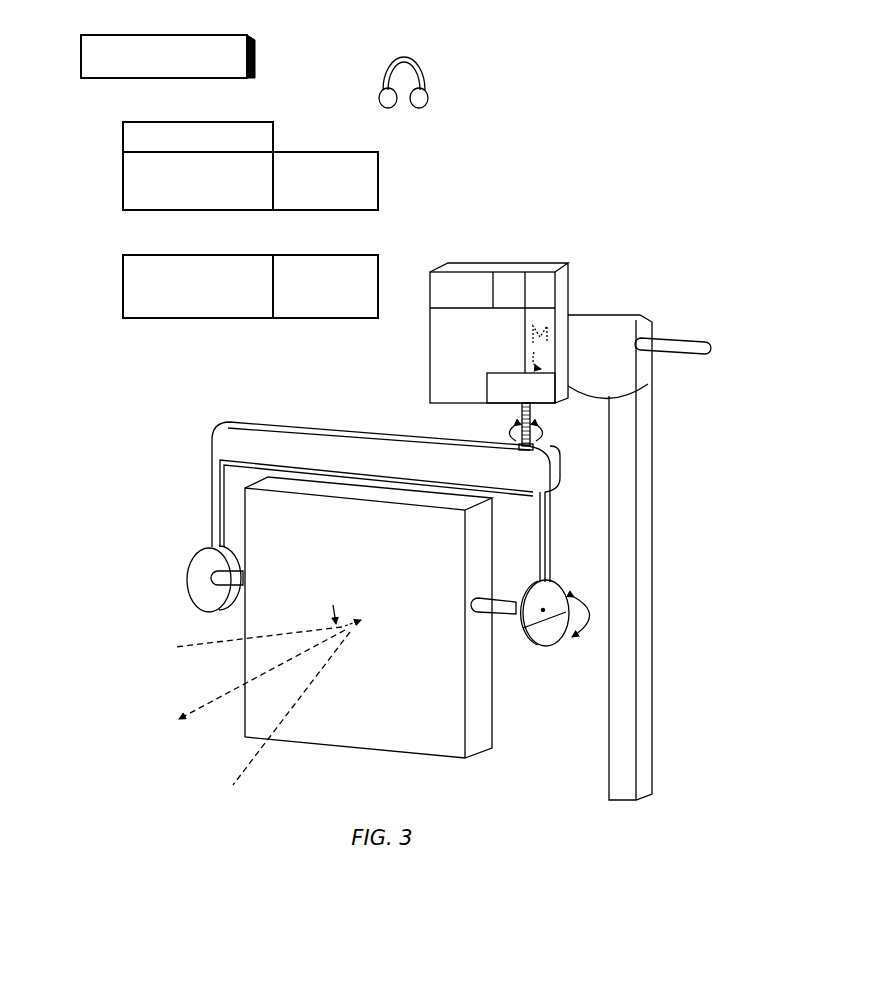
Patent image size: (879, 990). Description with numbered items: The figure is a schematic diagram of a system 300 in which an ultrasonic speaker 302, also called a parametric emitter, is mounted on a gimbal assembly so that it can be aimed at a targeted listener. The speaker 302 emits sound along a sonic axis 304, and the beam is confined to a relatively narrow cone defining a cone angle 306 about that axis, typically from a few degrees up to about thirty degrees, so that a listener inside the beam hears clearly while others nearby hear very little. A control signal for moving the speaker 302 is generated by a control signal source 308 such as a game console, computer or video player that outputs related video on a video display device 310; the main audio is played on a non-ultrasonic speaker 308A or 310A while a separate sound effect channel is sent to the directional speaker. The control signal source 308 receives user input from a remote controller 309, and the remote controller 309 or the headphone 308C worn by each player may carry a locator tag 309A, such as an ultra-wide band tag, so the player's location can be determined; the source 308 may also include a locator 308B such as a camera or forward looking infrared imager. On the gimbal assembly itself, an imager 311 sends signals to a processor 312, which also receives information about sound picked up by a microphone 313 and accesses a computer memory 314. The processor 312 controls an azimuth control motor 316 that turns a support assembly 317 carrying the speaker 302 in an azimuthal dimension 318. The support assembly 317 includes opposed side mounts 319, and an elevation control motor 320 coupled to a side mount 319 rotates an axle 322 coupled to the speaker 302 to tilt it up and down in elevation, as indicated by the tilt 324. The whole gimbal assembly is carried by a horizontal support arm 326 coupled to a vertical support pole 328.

The system 300 is at (616, 188).
The ultrasonic speaker 302 is at (300, 534).
The sonic axis 304 is at (215, 703).
The cone angle 306 is at (349, 639).
The control signal source 308 is at (123, 181).
The non-ultrasonic speaker 308A is at (378, 179).
The locator 308B is at (172, 122).
The headphone 308C is at (403, 58).
The remote controller 309 is at (153, 35).
The locator tag 309A is at (258, 54).
The video display device 310 is at (178, 255).
The non-ultrasonic speaker 310A is at (325, 255).
The imager 311 is at (468, 272).
The processor 312 is at (517, 272).
The microphone 313 is at (546, 356).
The computer memory 314 is at (556, 297).
The azimuth control motor 316 is at (520, 373).
The support assembly 317 is at (550, 437).
The azimuthal dimension 318 is at (515, 437).
The side mount 319 is at (552, 578).
The elevation control motor 320 is at (541, 646).
The axle 322 is at (500, 594).
The elevation tilt 324 is at (585, 642).
The horizontal support arm 326 is at (665, 338).
The vertical support pole 328 is at (652, 430).